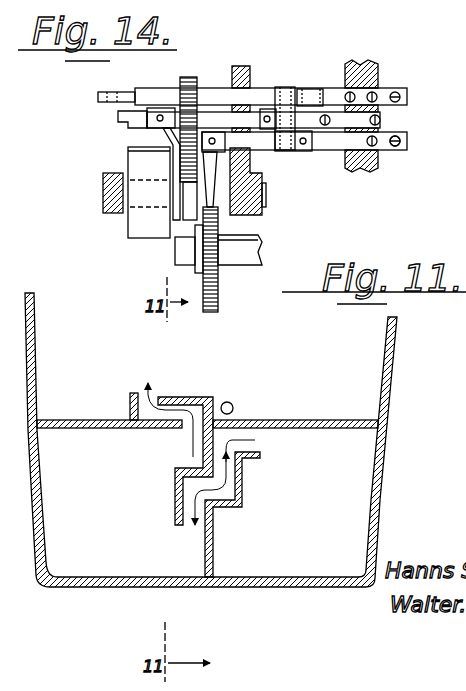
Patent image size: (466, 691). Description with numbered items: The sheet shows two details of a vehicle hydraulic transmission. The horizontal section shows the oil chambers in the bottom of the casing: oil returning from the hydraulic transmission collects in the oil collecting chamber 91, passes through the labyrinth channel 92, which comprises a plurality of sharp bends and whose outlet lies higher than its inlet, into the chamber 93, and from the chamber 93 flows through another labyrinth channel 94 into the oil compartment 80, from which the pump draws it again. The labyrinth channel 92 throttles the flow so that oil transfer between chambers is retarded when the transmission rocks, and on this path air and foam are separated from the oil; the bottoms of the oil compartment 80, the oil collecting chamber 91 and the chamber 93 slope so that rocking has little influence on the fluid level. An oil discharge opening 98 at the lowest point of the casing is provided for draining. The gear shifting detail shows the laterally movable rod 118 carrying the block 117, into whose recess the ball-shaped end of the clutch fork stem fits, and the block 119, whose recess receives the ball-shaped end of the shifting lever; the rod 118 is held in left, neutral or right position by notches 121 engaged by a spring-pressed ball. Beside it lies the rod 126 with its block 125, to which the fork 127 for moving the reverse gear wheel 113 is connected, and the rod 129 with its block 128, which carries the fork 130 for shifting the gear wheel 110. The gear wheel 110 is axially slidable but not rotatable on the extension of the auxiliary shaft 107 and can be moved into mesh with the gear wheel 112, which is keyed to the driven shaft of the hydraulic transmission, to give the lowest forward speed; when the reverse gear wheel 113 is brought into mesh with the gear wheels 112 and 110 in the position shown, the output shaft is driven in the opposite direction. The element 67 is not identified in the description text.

In FIG. 14, the rod 118 is at (98, 95).
In FIG. 14, the block 117 is at (316, 86).
In FIG. 14, the lever bar 67 is at (127, 112).
In FIG. 14, the fork 127 is at (165, 136).
In FIG. 14, the gear wheel 112 is at (180, 81).
In FIG. 14, the rod 126 is at (193, 122).
In FIG. 14, the gear wheel 113 is at (135, 218).
In FIG. 14, the gear wheel 110 is at (218, 287).
In FIG. 14, the fork 130 is at (218, 250).
In FIG. 14, the auxiliary shaft 107 is at (245, 240).
In FIG. 14, the notches 121 is at (372, 95).
In FIG. 14, the block 119 is at (285, 118).
In FIG. 14, the block 125 is at (288, 115).
In FIG. 14, the block 128 is at (285, 148).
In FIG. 14, the rod 129 is at (385, 147).
In FIG. 11, the oil compartment 80 is at (211, 440).
In FIG. 11, the labyrinth channel 94 is at (163, 405).
In FIG. 11, the labyrinth channel 92 is at (228, 468).
In FIG. 11, the oil discharge opening 98 is at (232, 401).
In FIG. 11, the chamber 93 is at (104, 500).
In FIG. 11, the oil collecting chamber 91 is at (309, 500).